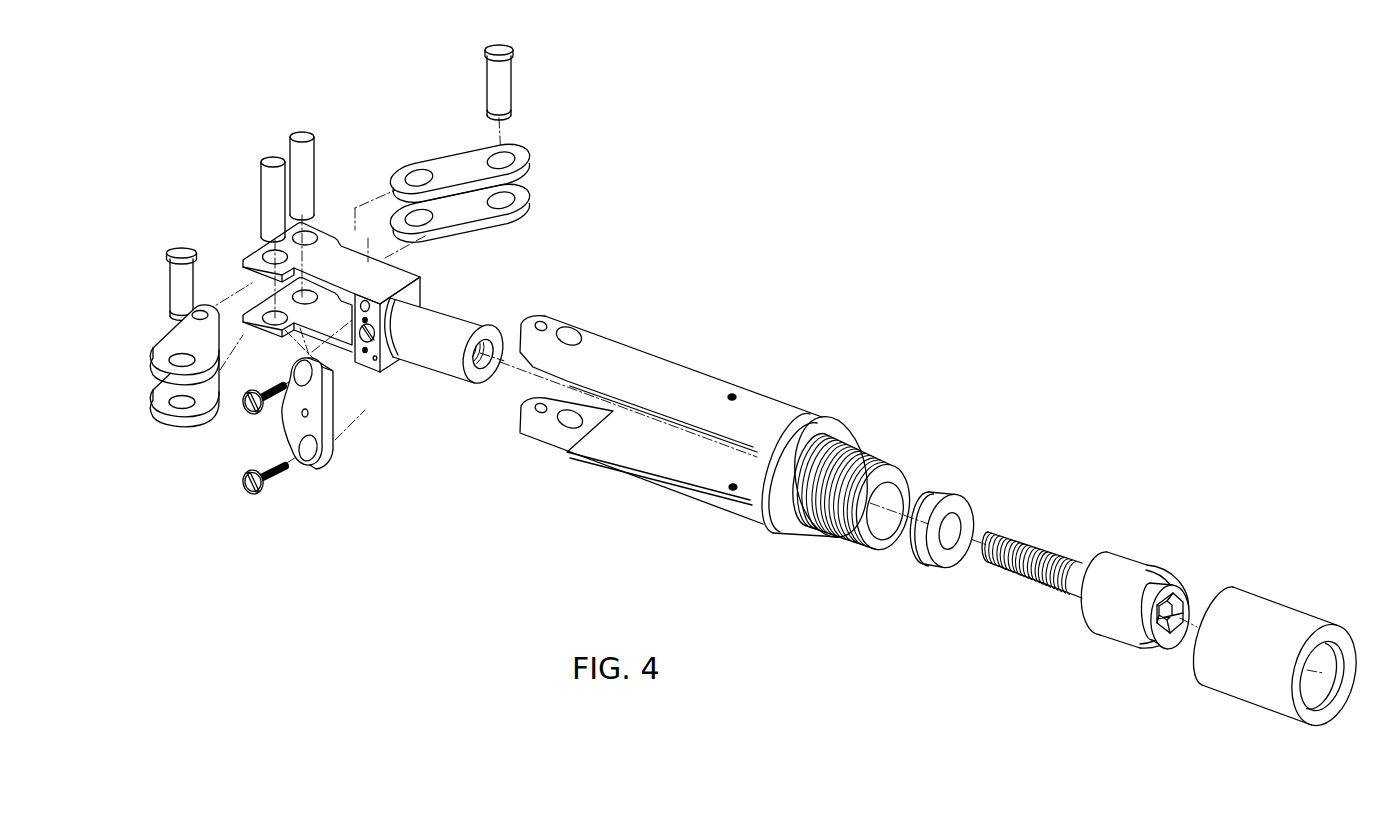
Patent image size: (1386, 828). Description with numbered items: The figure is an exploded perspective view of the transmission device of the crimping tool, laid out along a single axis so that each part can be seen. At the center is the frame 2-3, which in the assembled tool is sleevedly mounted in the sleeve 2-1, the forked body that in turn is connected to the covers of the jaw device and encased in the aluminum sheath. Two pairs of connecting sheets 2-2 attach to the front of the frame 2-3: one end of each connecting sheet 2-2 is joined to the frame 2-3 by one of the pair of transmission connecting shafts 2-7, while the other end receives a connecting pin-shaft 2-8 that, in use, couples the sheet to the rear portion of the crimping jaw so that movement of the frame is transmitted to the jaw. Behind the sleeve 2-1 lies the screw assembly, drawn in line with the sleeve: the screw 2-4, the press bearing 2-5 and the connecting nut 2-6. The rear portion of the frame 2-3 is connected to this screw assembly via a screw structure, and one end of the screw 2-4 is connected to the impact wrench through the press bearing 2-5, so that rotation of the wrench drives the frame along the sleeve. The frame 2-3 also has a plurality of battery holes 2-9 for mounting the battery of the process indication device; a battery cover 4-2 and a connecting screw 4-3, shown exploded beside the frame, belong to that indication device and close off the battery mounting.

The sleeve 2-1 is at (543, 443).
The connecting sheets 2-2 is at (152, 393).
The frame 2-3 is at (452, 323).
The screw 2-4 is at (1052, 550).
The press bearing 2-5 is at (947, 493).
The connecting nut 2-6 is at (1262, 603).
The transmission connecting shafts 2-7 is at (300, 138).
The connecting pin-shaft 2-8 is at (180, 252).
The battery holes 2-9 is at (376, 362).
The battery cover 4-2 is at (317, 427).
The connecting screw 4-3 is at (247, 475).